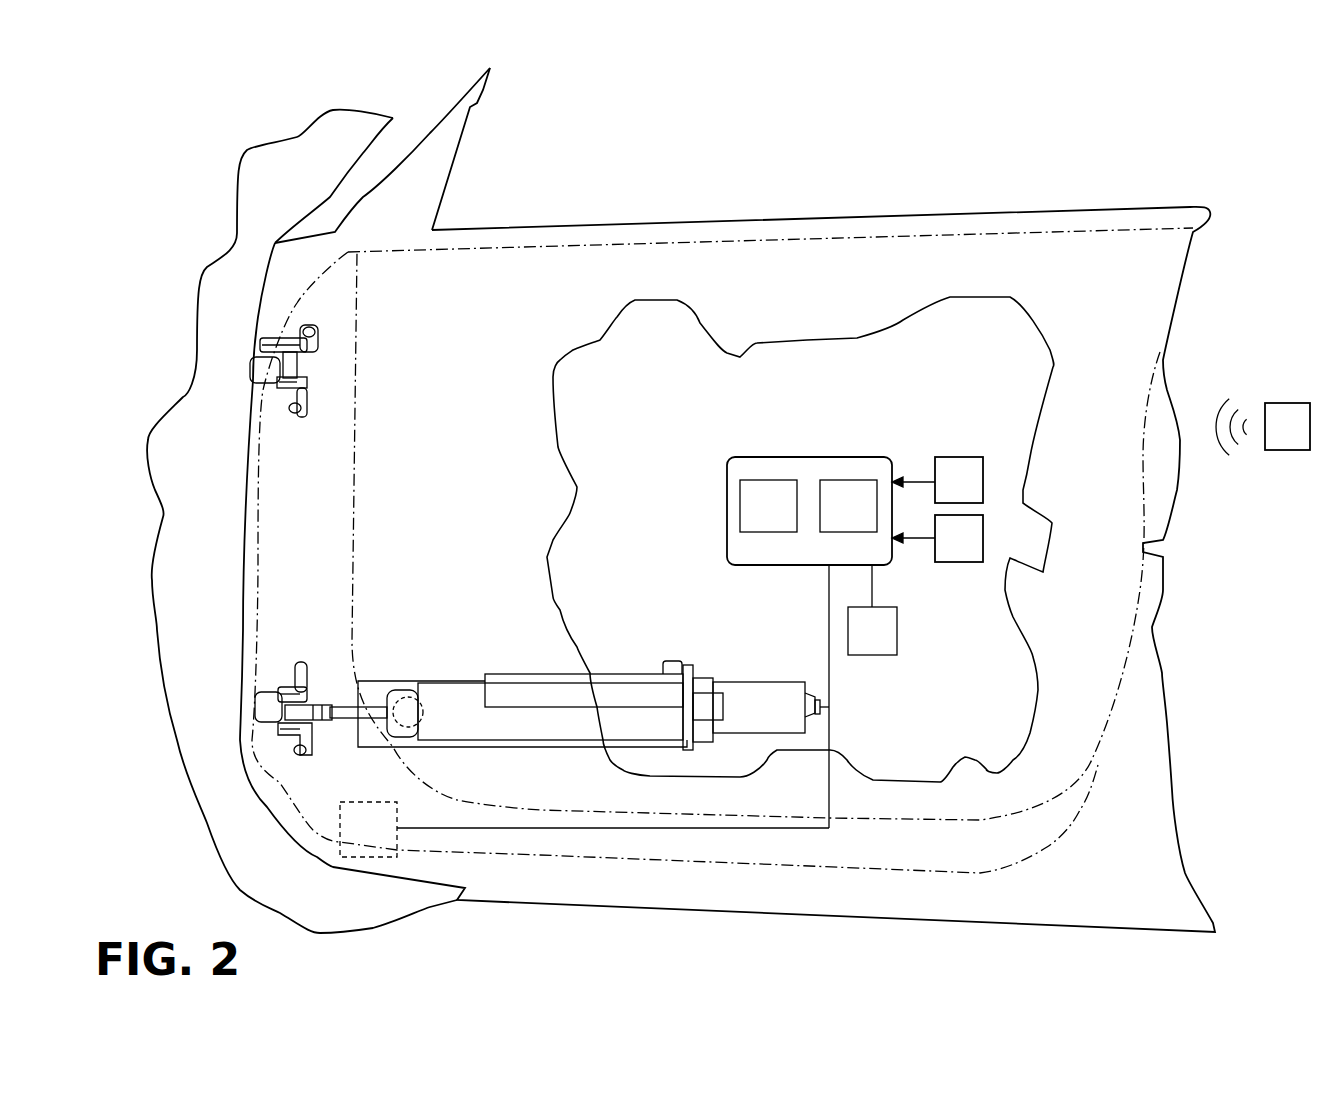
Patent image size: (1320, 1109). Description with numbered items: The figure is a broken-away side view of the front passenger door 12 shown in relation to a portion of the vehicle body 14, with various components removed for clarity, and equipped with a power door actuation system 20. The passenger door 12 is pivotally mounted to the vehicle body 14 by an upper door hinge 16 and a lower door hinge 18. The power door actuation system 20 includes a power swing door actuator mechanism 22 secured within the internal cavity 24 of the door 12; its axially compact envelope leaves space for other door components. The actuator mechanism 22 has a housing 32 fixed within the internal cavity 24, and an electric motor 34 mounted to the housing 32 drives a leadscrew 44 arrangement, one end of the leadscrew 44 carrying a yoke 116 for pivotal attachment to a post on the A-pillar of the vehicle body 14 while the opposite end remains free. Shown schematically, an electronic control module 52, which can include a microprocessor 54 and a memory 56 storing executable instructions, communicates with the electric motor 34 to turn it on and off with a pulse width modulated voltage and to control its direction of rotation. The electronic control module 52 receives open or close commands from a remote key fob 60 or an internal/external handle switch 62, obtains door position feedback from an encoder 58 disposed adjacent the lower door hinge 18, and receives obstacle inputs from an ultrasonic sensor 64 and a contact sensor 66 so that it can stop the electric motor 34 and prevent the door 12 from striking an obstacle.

The first passenger door 12 is at (580, 880).
The vehicle body 14 is at (318, 126).
The upper door hinge 16 is at (290, 340).
The lower door hinge 18 is at (275, 748).
The power door actuation system 20 is at (904, 408).
The power swing door actuator mechanism 22 is at (605, 632).
The internal cavity 24 is at (651, 439).
The housing 32 is at (617, 672).
The electric motor 34 is at (760, 690).
The leadscrew 44 is at (364, 683).
The electronic control module 52 is at (857, 457).
The microprocessor 54 is at (771, 492).
The memory 56 is at (843, 494).
The encoder 58 is at (365, 802).
The remote key fob 60 is at (1288, 442).
The internal/external handle switch 62 is at (873, 645).
The ultrasonic sensor 64 is at (957, 470).
The contact sensor 66 is at (958, 552).
The yoke 116 is at (306, 664).